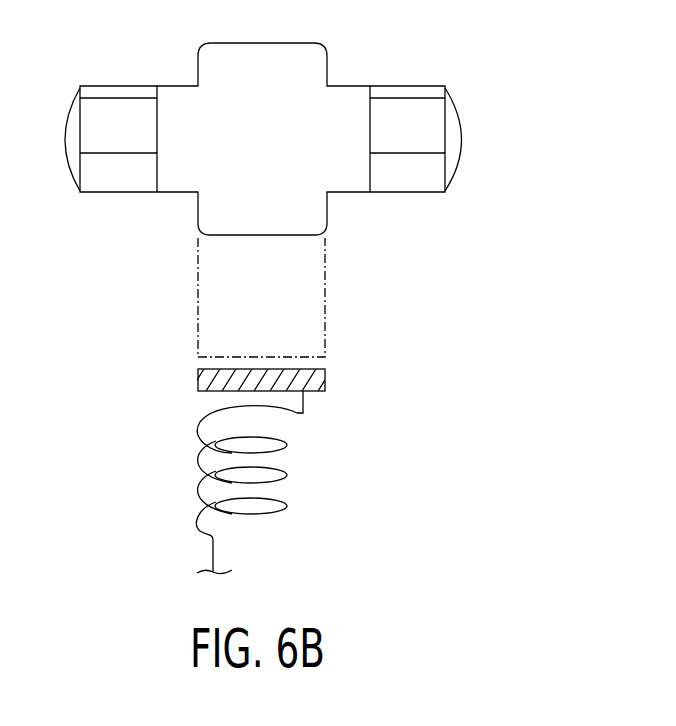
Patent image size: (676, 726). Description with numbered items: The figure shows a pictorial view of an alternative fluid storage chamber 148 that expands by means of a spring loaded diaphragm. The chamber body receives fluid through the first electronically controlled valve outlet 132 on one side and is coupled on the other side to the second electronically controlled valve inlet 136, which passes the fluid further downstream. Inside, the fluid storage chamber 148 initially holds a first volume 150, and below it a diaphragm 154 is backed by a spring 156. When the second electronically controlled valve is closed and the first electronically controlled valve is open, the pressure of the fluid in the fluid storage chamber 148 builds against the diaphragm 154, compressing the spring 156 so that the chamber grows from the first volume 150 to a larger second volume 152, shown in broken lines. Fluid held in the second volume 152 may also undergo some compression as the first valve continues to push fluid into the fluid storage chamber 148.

The fluid storage chamber 148 is at (358, 123).
The first volume 150 is at (280, 151).
The first electronically controlled valve outlet 132 is at (112, 175).
The second electronically controlled valve inlet 136 is at (412, 177).
The second volume 152 is at (302, 302).
The diaphragm 154 is at (198, 374).
The spring 156 is at (268, 513).